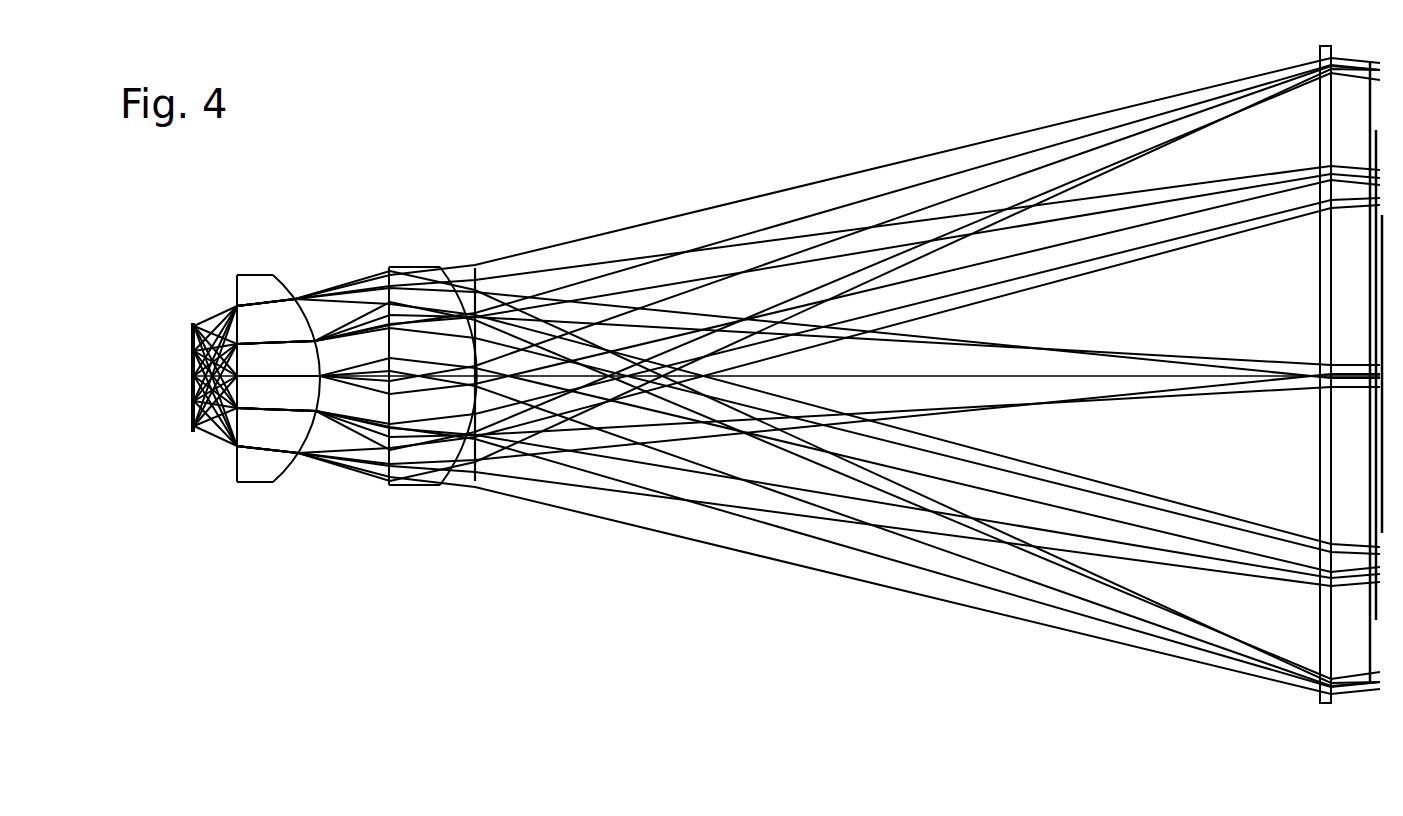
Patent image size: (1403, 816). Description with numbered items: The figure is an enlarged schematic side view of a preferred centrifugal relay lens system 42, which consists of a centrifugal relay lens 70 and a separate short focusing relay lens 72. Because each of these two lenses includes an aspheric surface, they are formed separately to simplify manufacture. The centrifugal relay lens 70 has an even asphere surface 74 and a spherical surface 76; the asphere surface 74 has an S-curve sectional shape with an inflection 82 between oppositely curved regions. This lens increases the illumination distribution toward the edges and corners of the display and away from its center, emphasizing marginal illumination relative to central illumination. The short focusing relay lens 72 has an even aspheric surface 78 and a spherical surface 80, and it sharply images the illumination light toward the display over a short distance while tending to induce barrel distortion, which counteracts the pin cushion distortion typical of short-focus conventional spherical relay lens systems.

The centrifugal relay lens system 42 is at (326, 360).
The centrifugal relay lens 70 is at (252, 415).
The short focusing relay lens 72 is at (414, 416).
The even asphere surface 74 is at (225, 452).
The spherical surface 76 is at (290, 457).
The even aspheric surface 78 is at (382, 457).
The spherical surface 80 is at (468, 448).
The inflection 82 is at (225, 308).